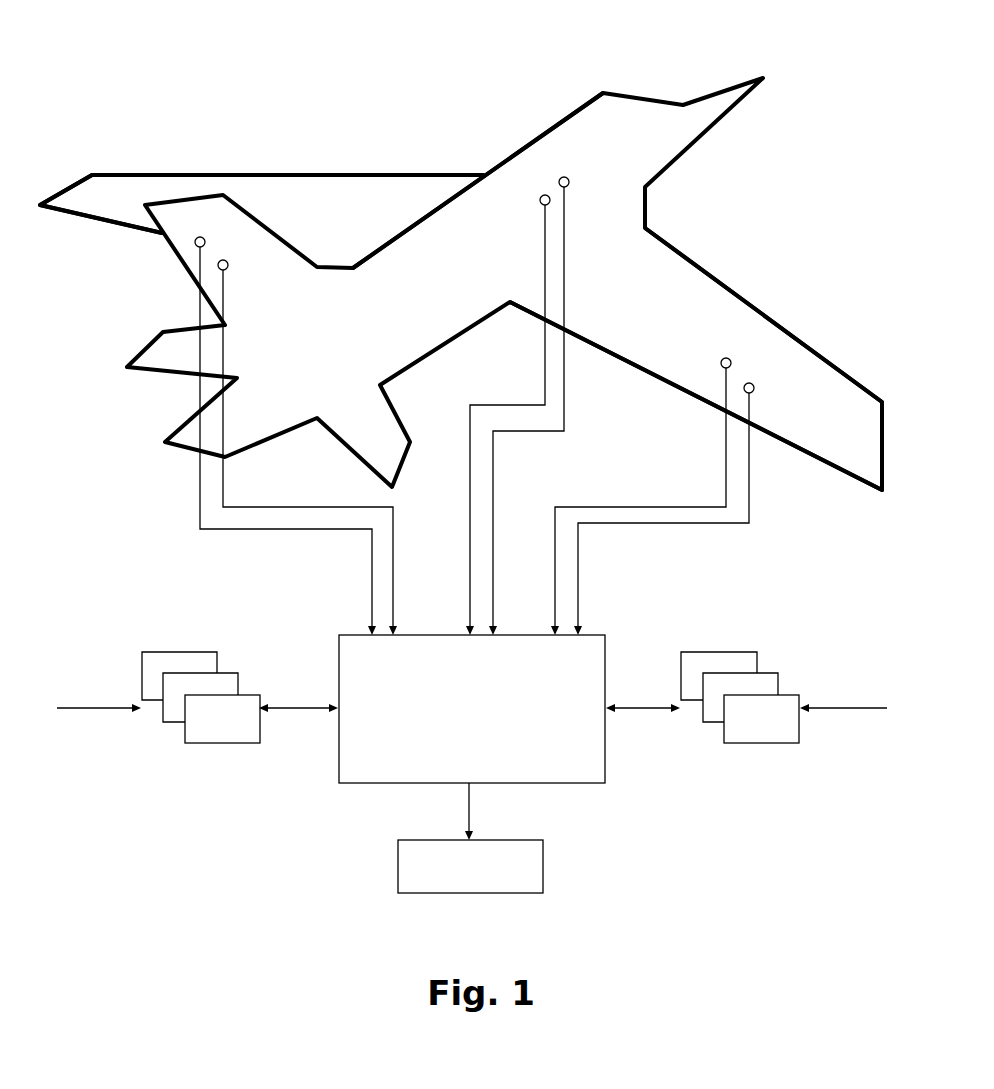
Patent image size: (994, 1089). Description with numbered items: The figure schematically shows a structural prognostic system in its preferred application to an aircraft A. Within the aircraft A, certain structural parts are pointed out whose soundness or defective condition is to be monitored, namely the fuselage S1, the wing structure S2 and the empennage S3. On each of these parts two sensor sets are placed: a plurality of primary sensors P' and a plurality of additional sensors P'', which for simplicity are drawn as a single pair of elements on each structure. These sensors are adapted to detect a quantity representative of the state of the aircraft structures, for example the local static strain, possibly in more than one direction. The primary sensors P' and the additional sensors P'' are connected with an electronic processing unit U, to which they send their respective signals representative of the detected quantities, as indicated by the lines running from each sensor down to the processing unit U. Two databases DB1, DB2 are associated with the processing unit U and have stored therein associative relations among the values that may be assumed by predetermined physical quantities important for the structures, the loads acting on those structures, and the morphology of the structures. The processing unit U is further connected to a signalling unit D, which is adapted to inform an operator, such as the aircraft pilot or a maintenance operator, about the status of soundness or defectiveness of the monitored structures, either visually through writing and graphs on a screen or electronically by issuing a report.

The aircraft A is at (461, 247).
The fuselage S1 is at (578, 127).
The wing structure S2 is at (700, 293).
The empennage S3 is at (248, 233).
The primary sensors P' is at (415, 415).
The additional sensors P'' is at (523, 406).
The electronic processing unit U is at (345, 657).
The database DB1 is at (130, 658).
The database DB2 is at (792, 655).
The signalling unit D is at (542, 865).